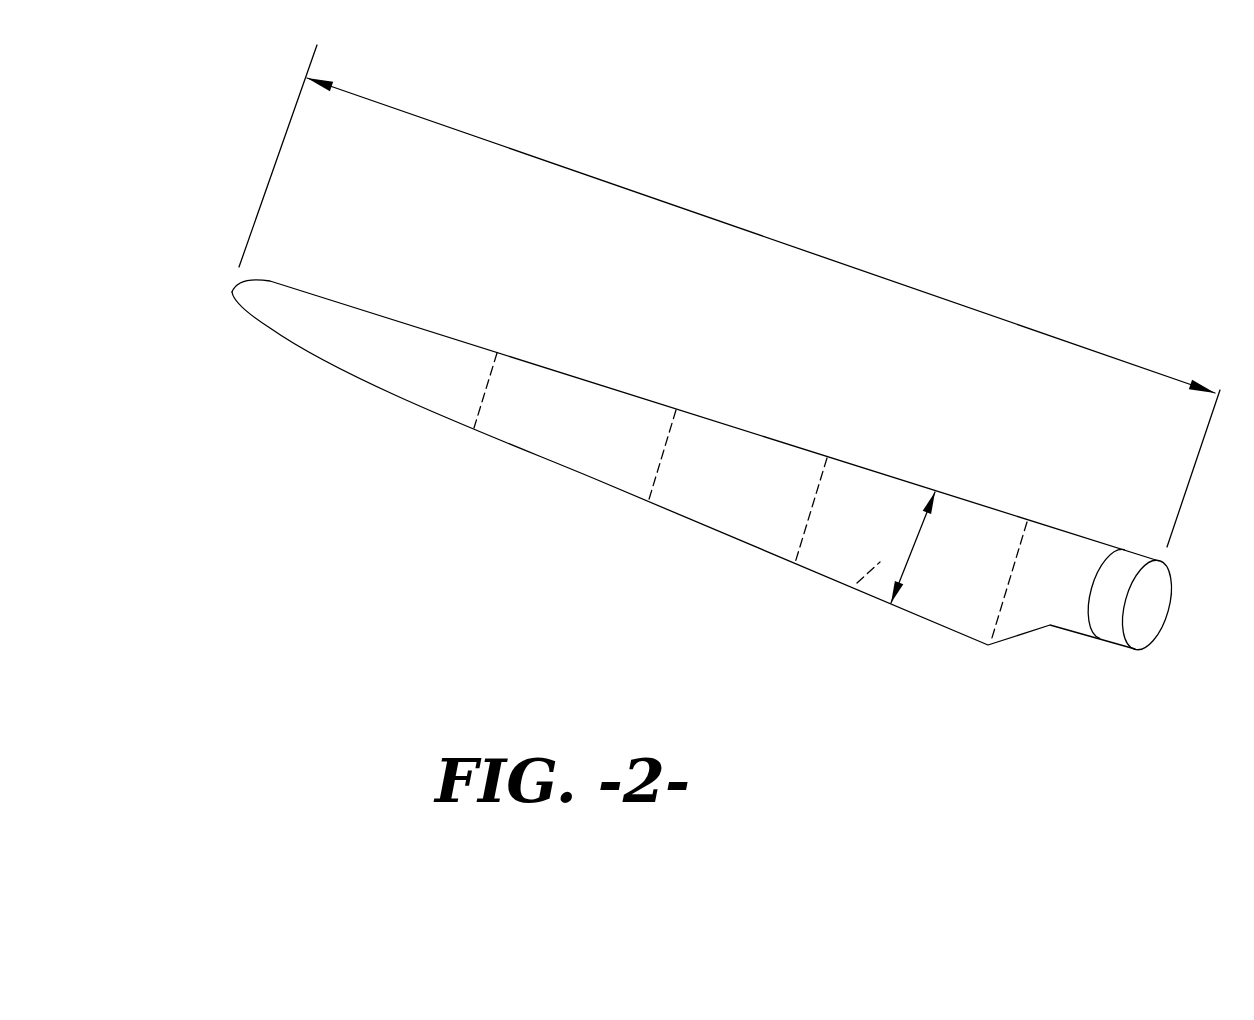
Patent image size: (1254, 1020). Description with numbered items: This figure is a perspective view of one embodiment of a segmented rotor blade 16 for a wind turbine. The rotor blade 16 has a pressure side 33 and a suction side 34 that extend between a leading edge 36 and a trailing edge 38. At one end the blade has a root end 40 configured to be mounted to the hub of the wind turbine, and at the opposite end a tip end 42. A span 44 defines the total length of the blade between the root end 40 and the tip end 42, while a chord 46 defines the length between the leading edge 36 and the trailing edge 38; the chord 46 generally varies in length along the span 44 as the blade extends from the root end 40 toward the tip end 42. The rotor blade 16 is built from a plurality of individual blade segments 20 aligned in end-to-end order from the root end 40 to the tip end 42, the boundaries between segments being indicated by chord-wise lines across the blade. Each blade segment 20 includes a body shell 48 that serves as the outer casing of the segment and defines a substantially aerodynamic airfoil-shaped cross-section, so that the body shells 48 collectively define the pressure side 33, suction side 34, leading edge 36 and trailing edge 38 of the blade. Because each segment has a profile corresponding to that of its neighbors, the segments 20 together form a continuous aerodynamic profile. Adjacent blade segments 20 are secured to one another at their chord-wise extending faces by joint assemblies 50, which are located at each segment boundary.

The rotor blade 16 is at (1110, 253).
The blade segments 20 is at (388, 343).
The pressure side 33 is at (853, 588).
The suction side 34 is at (838, 557).
The leading edge 36 is at (803, 458).
The trailing edge 38 is at (700, 527).
The root end 40 is at (1113, 628).
The tip end 42 is at (232, 288).
The span 44 is at (718, 222).
The chord 46 is at (913, 553).
The body shell 48 is at (703, 453).
The joint assemblies 50 is at (657, 467).